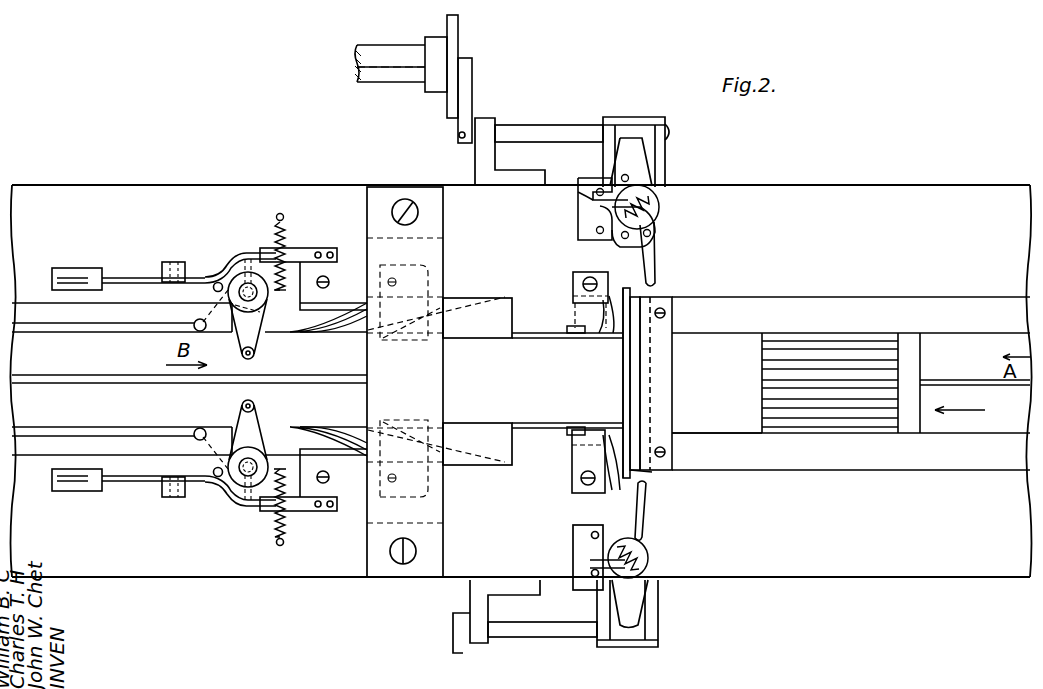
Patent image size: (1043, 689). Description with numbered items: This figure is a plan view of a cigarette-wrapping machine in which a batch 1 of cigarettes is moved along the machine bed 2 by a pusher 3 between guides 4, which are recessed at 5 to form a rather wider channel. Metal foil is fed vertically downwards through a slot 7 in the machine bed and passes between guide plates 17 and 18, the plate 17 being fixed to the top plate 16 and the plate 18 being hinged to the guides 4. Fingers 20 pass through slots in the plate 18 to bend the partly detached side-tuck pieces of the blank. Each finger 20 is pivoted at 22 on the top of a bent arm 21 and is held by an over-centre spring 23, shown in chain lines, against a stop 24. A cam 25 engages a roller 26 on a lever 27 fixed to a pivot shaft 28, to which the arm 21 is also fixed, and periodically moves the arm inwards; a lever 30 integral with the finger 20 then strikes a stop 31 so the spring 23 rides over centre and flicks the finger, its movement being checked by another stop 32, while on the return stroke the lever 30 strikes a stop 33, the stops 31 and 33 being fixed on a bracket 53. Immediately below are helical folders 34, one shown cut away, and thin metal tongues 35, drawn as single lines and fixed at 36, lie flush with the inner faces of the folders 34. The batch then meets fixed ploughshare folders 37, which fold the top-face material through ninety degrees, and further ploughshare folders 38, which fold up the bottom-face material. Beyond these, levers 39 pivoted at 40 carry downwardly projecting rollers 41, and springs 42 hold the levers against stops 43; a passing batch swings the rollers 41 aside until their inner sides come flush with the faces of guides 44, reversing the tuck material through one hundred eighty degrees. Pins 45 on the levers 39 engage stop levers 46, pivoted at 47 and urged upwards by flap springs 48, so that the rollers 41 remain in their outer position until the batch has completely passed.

The batch 1 is at (864, 353).
The machine bed 2 is at (520, 381).
The pusher 3 is at (905, 357).
The guides 4 is at (851, 383).
The recess 5 is at (718, 422).
The slot 7 is at (655, 474).
The top plate 16 is at (541, 396).
The guide plate 17 is at (625, 396).
The guide plate 18 is at (633, 411).
The finger 20 is at (656, 265).
The bent arm 21 is at (633, 153).
The pivot 22 is at (656, 209).
The over-centre spring 23 is at (640, 184).
The stop 24 is at (656, 237).
The cam 25 is at (456, 33).
The roller 26 is at (462, 57).
The lever 27 is at (470, 96).
The pivot shaft 28 is at (557, 131).
The lever 30 is at (590, 216).
The stop 31 is at (598, 233).
The stop 32 is at (622, 239).
The stop 33 is at (598, 185).
The helical folder 34 is at (600, 334).
The tongue 35 is at (522, 334).
The fixing 36 is at (582, 448).
The ploughshare folder 37 is at (500, 451).
The ploughshare folder 38 is at (343, 441).
The lever 39 is at (254, 419).
The pivot 40 is at (240, 494).
The roller 41 is at (242, 405).
The spring 42 is at (277, 226).
The stop 43 is at (213, 273).
The guide 44 is at (105, 333).
The pin 45 is at (237, 256).
The stop lever 46 is at (117, 278).
The pivot 47 is at (171, 262).
The flap spring 48 is at (298, 256).
The bracket 53 is at (578, 198).